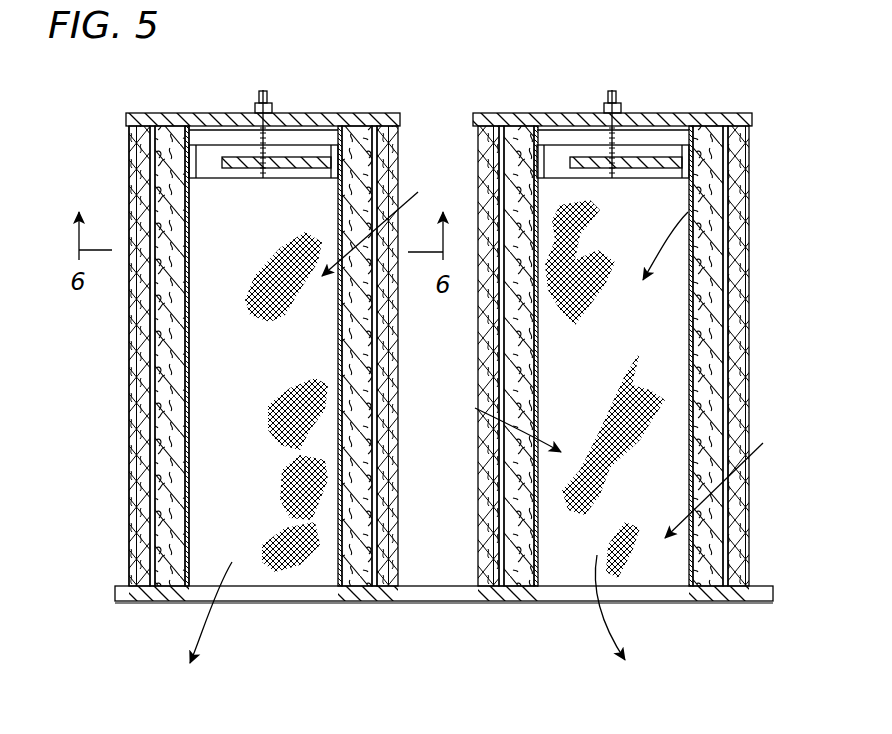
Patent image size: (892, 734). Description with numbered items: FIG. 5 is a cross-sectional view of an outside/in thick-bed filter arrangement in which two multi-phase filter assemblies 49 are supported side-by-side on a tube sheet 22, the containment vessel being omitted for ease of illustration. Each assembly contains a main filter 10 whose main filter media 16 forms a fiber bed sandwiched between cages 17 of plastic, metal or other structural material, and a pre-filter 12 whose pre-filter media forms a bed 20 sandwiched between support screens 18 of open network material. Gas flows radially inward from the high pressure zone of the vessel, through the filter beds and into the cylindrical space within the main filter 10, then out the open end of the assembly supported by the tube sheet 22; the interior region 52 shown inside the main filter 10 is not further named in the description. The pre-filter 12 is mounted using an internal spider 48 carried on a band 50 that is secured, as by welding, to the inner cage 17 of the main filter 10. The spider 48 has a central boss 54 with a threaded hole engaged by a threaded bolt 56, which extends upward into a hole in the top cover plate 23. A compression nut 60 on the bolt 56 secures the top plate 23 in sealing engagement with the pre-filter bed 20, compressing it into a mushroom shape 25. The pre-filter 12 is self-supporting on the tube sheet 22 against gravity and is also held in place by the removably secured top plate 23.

The main filter 10 is at (220, 528).
The pre-filter 12 is at (117, 452).
The main filter media 16 is at (165, 275).
The cages 17 is at (150, 471).
The support screens 18 is at (140, 337).
The bed 20 is at (115, 348).
The tube sheet 22 is at (478, 603).
The top cover plate 23 is at (300, 114).
The mushroom shape 25 is at (142, 586).
The spider 48 is at (300, 162).
The multi-phase filter assemblies 49 is at (393, 90).
The band 50 is at (192, 160).
The chamber 52 is at (338, 322).
The central boss 54 is at (604, 182).
The threaded bolt 56 is at (268, 98).
The compression nut 60 is at (256, 106).